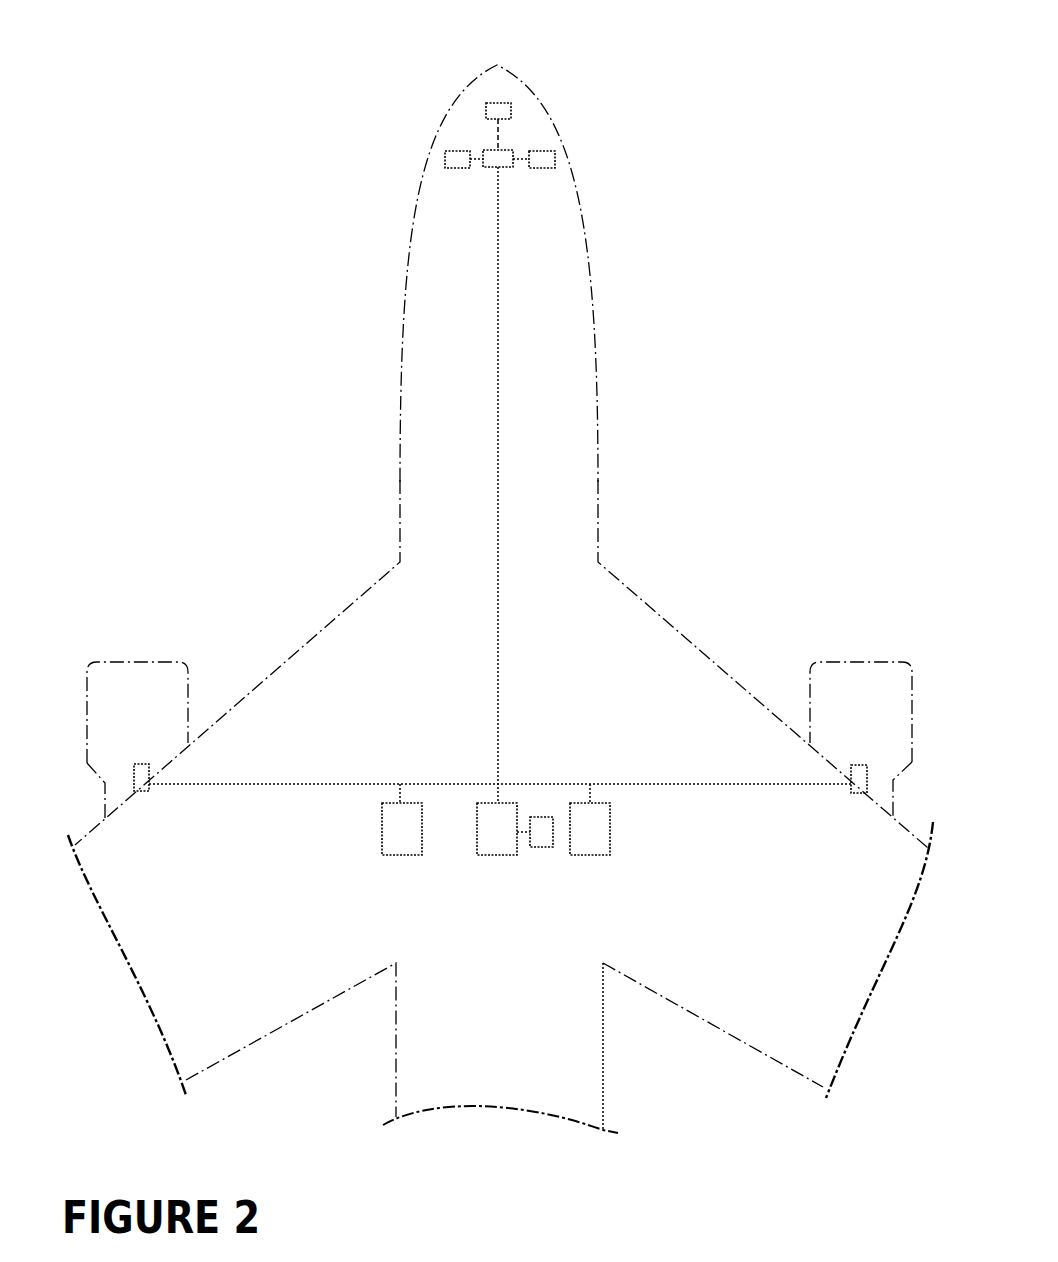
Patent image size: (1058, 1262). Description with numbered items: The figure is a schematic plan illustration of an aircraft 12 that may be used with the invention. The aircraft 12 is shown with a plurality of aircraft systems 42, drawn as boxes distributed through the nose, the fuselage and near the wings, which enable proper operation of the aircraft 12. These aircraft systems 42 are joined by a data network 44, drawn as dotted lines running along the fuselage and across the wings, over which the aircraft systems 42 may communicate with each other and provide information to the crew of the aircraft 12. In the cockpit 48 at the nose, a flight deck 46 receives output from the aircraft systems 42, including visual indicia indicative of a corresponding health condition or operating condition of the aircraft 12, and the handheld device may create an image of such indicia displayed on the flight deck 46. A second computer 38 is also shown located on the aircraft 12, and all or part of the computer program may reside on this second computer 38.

The aircraft 12 is at (285, 146).
The second computer 38 is at (503, 102).
The aircraft systems 42 is at (452, 162).
The data network 44 is at (500, 258).
The flight deck 46 is at (503, 150).
The cockpit 48 is at (440, 130).